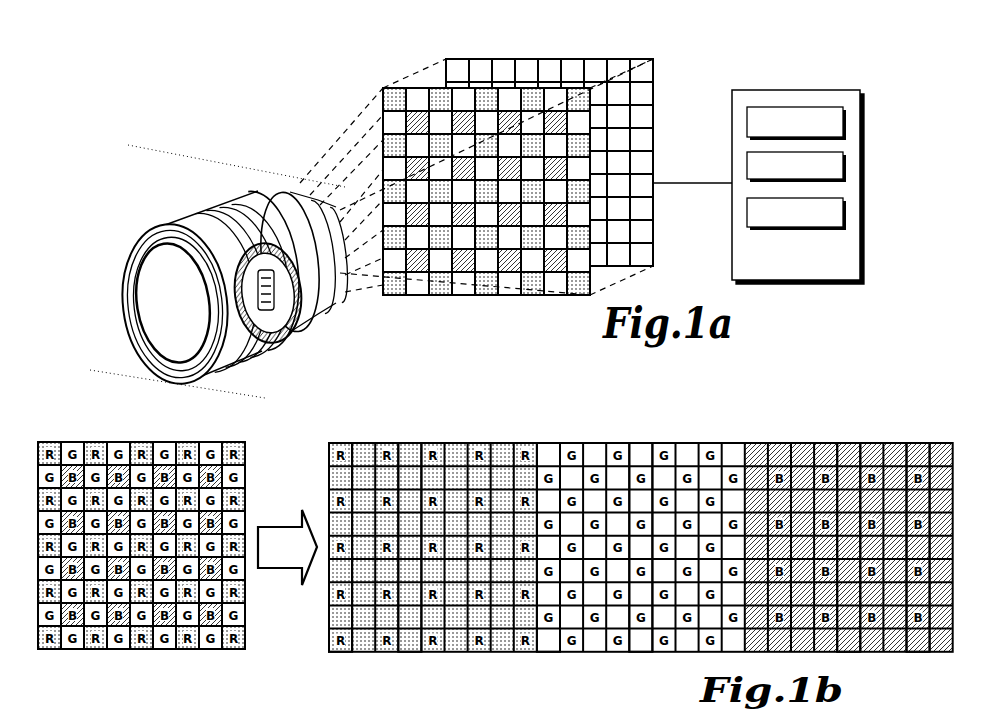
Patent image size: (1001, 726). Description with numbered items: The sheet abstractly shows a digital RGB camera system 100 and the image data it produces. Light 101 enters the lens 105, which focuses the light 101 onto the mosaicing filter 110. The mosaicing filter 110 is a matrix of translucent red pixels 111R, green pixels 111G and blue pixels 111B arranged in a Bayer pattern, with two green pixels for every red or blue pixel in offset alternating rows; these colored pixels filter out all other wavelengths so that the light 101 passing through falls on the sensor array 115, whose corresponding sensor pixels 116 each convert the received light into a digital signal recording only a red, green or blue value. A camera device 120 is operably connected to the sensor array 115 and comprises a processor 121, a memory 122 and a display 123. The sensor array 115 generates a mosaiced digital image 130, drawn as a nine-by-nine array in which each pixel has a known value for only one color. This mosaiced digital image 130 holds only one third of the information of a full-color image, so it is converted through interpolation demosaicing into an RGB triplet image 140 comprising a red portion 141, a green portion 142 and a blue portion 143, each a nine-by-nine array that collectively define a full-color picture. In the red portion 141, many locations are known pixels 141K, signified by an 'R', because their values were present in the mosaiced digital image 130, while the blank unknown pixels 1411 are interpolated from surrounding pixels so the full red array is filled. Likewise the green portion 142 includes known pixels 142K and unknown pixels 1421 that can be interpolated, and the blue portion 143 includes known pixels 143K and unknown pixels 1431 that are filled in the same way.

In FIG. 1a, the digital RGB camera system 100 is at (690, 78).
In FIG. 1a, the light 101 is at (327, 127).
In FIG. 1a, the lens 105 is at (120, 300).
In FIG. 1a, the mosaicing filter 110 is at (395, 297).
In FIG. 1a, the red pixels 111R is at (478, 297).
In FIG. 1a, the green pixels 111G is at (540, 297).
In FIG. 1a, the blue pixels 111B is at (560, 297).
In FIG. 1a, the sensor array 115 is at (445, 62).
In FIG. 1a, the sensor pixels 116 is at (655, 95).
In FIG. 1a, the camera device 120 is at (800, 90).
In FIG. 1a, the processor 121 is at (846, 120).
In FIG. 1a, the memory 122 is at (846, 162).
In FIG. 1a, the display 123 is at (846, 208).
In FIG. 1b, the mosaiced digital image 130 is at (166, 652).
In FIG. 1b, the RGB triplet image 140 is at (611, 531).
In FIG. 1b, the red portion 141 is at (537, 429).
In FIG. 1b, the green portion 142 is at (745, 429).
In FIG. 1b, the blue portion 143 is at (952, 429).
In FIG. 1b, the known red pixels 141K is at (329, 652).
In FIG. 1b, the unknown red pixels 1411 is at (399, 654).
In FIG. 1b, the known green pixels 142K is at (558, 654).
In FIG. 1b, the unknown green pixels 1421 is at (633, 654).
In FIG. 1b, the unknown blue pixels 1431 is at (855, 654).
In FIG. 1b, the known blue pixels 143K is at (912, 654).